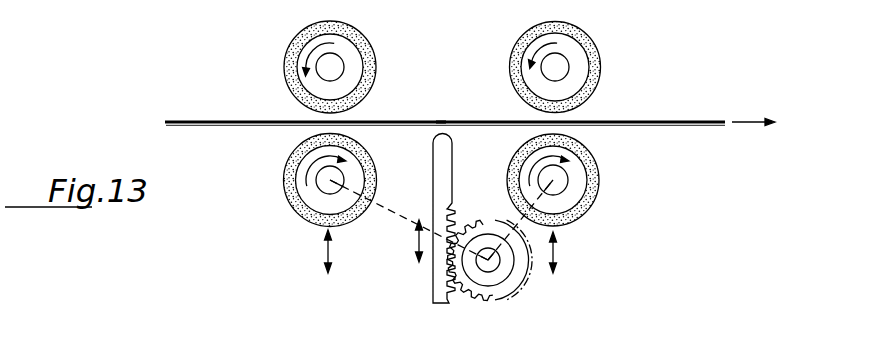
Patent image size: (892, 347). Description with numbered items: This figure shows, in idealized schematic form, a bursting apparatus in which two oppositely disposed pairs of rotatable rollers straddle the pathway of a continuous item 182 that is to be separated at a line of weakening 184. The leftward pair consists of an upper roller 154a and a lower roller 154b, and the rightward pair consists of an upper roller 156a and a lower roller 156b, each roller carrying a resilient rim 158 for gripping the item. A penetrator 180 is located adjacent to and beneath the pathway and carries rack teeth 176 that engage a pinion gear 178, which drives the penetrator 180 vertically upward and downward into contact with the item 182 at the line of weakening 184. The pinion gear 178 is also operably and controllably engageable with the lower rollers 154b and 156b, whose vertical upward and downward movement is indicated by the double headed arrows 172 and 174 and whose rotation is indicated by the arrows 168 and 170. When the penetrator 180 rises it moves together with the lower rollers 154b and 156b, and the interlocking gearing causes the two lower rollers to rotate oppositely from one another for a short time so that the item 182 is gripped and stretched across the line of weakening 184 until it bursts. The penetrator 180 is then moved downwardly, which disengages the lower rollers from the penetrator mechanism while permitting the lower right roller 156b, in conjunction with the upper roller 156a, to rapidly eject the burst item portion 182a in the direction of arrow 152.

The ejection direction arrow 152 is at (752, 121).
The upper roller of leftward roller pair 154a is at (355, 53).
The lower roller of leftward roller pair 154b is at (313, 202).
The upper roller of rightward roller pair 156a is at (578, 52).
The lower roller of rightward roller pair 156b is at (583, 172).
The resilient rim 158 is at (294, 41).
The rotation arrow of lower left roller 168 is at (308, 170).
The rotation arrow of lower right roller 170 is at (532, 167).
The double headed arrow for lower left roller movement 172 is at (324, 252).
The double headed arrow for lower right roller movement 174 is at (562, 255).
The rack teeth 176 is at (453, 217).
The pinion gear 178 is at (517, 282).
The penetrator 180 is at (433, 154).
The item 182 is at (200, 121).
The item portion 182a is at (666, 121).
The line of weakening 184 is at (441, 120).